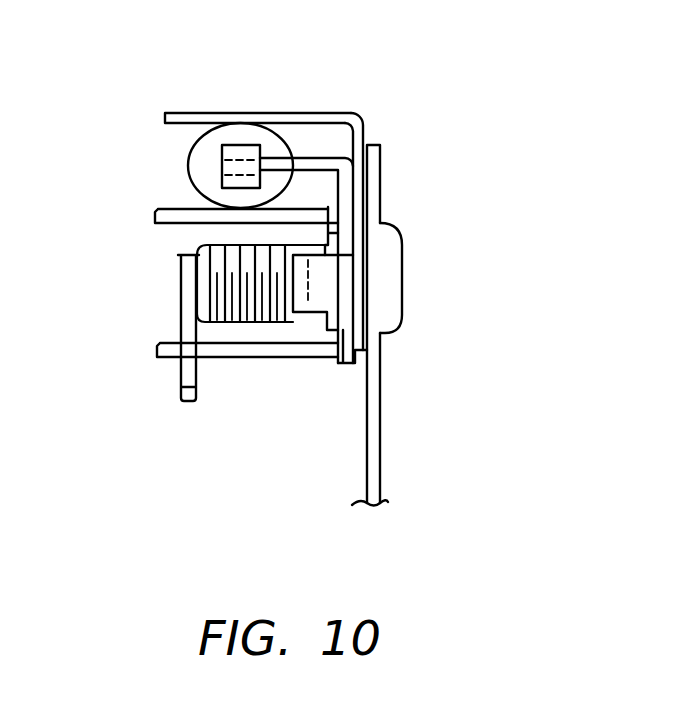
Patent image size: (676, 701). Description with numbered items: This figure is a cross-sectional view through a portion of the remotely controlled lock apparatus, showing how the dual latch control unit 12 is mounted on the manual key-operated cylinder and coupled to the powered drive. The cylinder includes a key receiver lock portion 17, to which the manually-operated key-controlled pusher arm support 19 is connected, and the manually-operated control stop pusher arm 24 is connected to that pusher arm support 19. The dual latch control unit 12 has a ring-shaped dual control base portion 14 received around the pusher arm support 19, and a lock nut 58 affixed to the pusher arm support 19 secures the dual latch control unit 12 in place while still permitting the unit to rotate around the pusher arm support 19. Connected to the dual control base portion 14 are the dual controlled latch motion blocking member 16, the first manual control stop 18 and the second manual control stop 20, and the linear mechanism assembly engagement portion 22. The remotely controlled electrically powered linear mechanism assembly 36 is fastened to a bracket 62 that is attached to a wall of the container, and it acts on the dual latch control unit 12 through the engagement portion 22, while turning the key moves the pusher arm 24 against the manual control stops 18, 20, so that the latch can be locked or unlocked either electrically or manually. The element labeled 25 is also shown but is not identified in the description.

The dual latch control unit 12 is at (386, 207).
The dual control base portion 14 is at (343, 358).
The dual controlled latch motion blocking member 16 is at (330, 287).
The key receiver lock portion 17 is at (395, 265).
The first manual control stop 18 is at (167, 222).
The manually-operated key-controlled pusher arm support 19 is at (275, 290).
The second manual control stop 20 is at (165, 355).
The linear mechanism assembly engagement portion 22 is at (307, 158).
The manually-operated control stop pusher arm 24 is at (181, 326).
The plate lower portion 25 is at (375, 458).
The remotely controlled electrically powered linear mechanism assembly 36 is at (182, 160).
The lock nut 58 is at (328, 235).
The bracket 62 is at (175, 113).